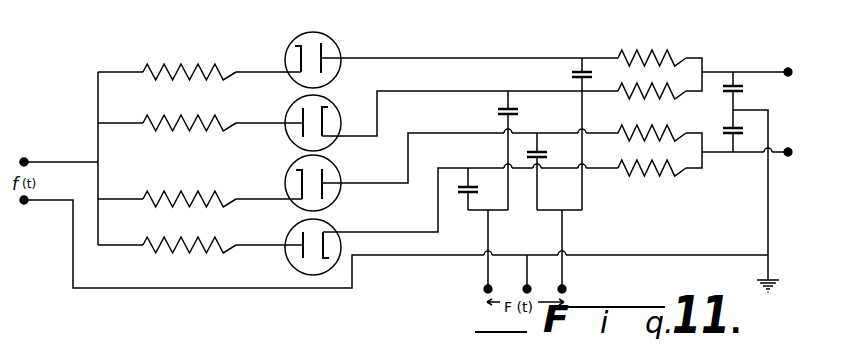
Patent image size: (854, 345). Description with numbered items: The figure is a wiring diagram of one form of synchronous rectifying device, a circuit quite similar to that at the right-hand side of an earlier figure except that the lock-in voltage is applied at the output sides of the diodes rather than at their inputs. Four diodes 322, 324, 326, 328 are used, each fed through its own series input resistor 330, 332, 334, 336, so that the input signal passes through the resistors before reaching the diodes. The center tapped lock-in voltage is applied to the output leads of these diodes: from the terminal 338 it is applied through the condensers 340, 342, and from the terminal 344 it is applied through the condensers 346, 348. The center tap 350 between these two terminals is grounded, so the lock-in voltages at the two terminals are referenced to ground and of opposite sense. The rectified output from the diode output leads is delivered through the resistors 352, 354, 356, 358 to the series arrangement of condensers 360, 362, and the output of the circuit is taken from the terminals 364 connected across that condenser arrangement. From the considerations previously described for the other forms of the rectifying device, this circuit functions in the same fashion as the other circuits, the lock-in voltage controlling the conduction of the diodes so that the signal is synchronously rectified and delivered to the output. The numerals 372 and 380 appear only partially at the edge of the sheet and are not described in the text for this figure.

The diode 322 is at (294, 34).
The diode 324 is at (289, 108).
The diode 326 is at (288, 173).
The diode 328 is at (289, 236).
The series input resistor 330 is at (189, 65).
The series input resistor 332 is at (189, 116).
The series input resistor 334 is at (190, 193).
The series input resistor 336 is at (190, 239).
The terminal 338 is at (567, 289).
The condenser 340 is at (585, 68).
The condenser 342 is at (541, 146).
The terminal 344 is at (484, 289).
The condenser 346 is at (516, 104).
The condenser 348 is at (456, 172).
The center tap 350 is at (523, 287).
The resistor 352 is at (649, 51).
The resistor 354 is at (668, 96).
The resistor 356 is at (668, 130).
The resistor 358 is at (669, 177).
The condenser 360 is at (740, 80).
The condenser 362 is at (736, 142).
The terminals 364 is at (785, 92).
The partially visible numeral (adjacent figure) 372 is at (297, 336).
The partially visible numeral (adjacent figure) 380 is at (202, 339).